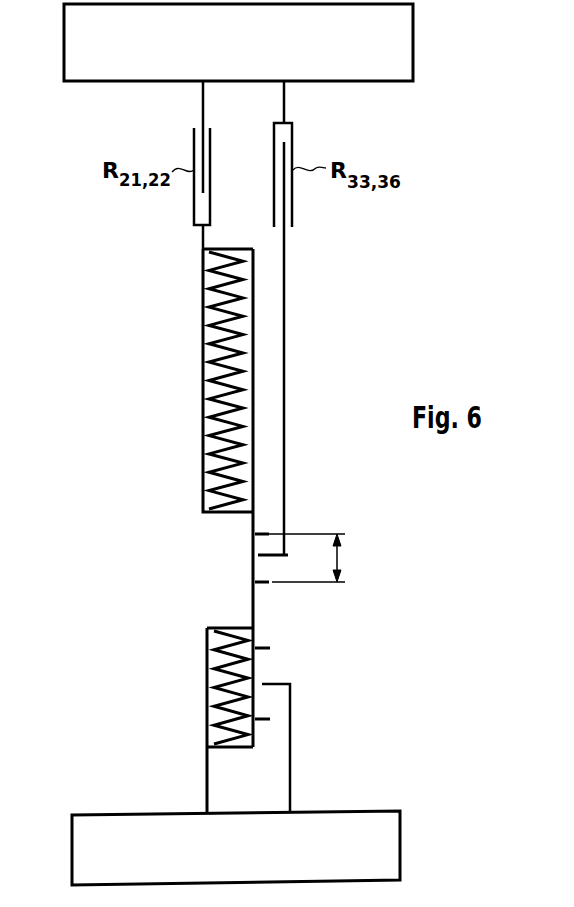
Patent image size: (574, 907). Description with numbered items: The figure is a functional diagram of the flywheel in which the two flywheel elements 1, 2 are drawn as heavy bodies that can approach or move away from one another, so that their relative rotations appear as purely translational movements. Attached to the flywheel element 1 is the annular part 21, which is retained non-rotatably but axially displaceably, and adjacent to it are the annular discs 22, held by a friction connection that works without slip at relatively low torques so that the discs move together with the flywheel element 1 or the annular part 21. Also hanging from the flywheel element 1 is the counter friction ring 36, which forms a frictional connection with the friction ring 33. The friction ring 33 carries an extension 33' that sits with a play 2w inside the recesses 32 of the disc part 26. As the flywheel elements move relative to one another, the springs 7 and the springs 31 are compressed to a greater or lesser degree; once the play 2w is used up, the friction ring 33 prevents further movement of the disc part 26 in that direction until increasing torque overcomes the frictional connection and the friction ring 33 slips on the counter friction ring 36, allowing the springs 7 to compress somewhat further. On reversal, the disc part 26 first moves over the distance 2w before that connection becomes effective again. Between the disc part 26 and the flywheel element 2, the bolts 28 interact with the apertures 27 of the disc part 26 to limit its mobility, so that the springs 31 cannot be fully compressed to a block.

The flywheel element 1 is at (394, 62).
The flywheel element 2 is at (364, 823).
The annular part 21 is at (203, 106).
The annular discs 22 is at (203, 265).
The counter friction ring 36 is at (284, 100).
The friction ring 33 is at (315, 348).
The extension 33' is at (285, 592).
The springs 7 is at (213, 422).
The disc part 26 is at (253, 428).
The recesses 32 is at (258, 564).
The play 2w is at (340, 558).
The springs 31 is at (214, 692).
The bolts 28 is at (275, 681).
The apertures 27 is at (262, 702).